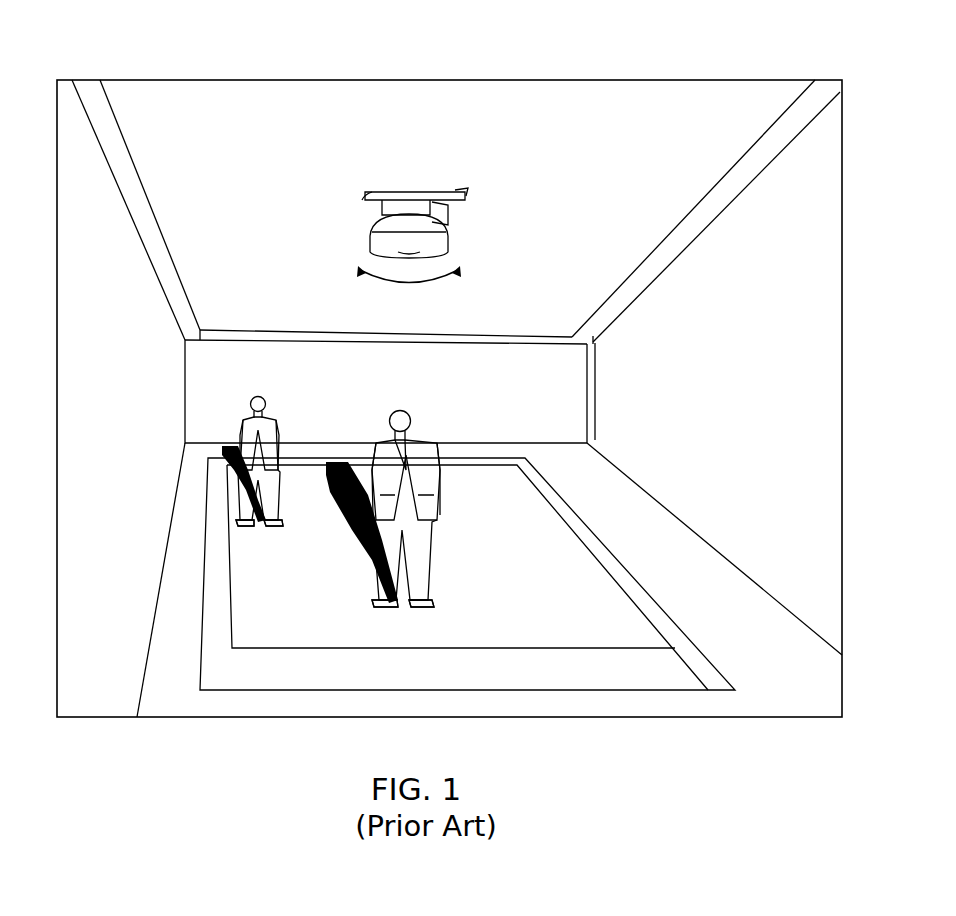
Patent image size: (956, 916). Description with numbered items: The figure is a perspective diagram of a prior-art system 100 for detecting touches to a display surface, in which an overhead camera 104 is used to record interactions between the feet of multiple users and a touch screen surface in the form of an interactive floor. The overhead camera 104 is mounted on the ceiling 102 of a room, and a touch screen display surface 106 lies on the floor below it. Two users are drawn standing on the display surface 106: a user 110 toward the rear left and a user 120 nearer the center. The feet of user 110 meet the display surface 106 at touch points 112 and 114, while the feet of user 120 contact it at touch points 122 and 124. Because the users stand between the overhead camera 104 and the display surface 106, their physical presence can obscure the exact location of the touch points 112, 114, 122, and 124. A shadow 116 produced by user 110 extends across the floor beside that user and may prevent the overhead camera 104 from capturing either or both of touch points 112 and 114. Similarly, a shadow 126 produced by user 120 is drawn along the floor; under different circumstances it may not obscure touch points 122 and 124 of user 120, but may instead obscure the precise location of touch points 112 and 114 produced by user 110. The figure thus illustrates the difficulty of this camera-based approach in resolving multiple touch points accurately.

The system 100 is at (740, 64).
The ceiling 102 is at (233, 174).
The overhead camera 104 is at (450, 248).
The touch screen display surface 106 is at (592, 631).
The user 110 is at (282, 420).
The touch point 112 is at (243, 527).
The touch point 114 is at (275, 532).
The shadow 116 is at (226, 450).
The user 120 is at (437, 513).
The touch point 122 is at (386, 612).
The touch point 124 is at (440, 602).
The shadow 126 is at (352, 540).